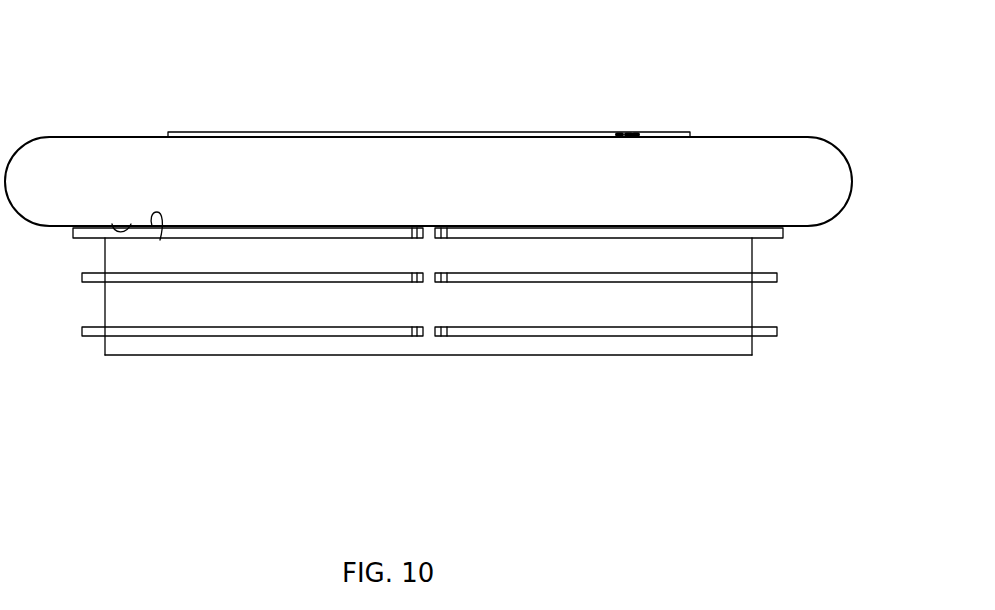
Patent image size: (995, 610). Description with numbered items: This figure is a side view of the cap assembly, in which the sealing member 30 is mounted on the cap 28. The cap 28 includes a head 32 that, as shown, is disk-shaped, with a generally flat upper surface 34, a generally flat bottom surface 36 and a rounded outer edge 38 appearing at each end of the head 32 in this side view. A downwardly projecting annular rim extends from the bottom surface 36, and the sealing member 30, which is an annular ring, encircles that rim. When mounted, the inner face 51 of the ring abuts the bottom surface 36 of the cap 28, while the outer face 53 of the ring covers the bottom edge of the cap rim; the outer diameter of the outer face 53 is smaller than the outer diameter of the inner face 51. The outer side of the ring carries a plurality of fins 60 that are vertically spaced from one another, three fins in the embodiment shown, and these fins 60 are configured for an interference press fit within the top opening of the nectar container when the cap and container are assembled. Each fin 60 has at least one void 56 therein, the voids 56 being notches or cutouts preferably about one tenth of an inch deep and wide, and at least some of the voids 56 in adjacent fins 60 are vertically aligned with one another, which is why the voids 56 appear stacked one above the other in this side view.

The cap 28 is at (670, 116).
The sealing member 30 is at (804, 337).
The head 32 is at (133, 155).
The upper surface 34 is at (737, 133).
The bottom surface 36 is at (113, 226).
The rounded outer edge 38 is at (857, 183).
The inner face 51 is at (160, 240).
The outer face 53 is at (135, 357).
The void 56 is at (423, 336).
The fins 60 is at (78, 332).